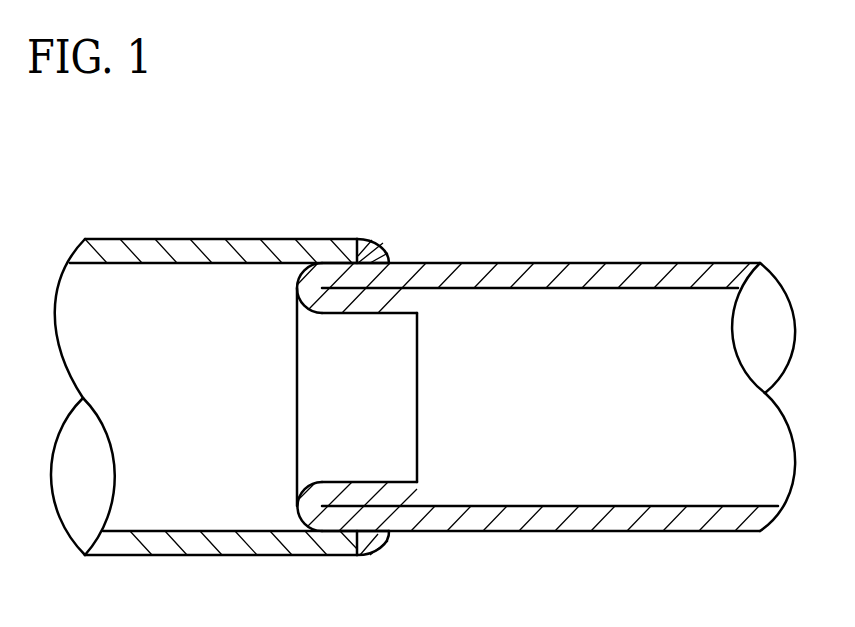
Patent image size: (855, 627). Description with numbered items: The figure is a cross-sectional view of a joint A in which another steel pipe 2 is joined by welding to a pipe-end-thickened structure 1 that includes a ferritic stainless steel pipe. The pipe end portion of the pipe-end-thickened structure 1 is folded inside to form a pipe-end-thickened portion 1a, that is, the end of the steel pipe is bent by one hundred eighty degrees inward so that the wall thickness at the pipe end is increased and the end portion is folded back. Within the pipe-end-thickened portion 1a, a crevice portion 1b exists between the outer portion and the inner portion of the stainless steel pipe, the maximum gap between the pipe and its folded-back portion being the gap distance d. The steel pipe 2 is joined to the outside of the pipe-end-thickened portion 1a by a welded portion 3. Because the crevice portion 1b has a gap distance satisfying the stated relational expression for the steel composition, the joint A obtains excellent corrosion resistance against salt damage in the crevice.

The pipe-end-thickened structure 1 is at (637, 220).
The pipe-end-thickened portion 1a is at (372, 303).
The crevice portion 1b is at (357, 504).
The steel pipe 2 is at (212, 239).
The welded portion 3 is at (380, 239).
The joint A is at (415, 173).